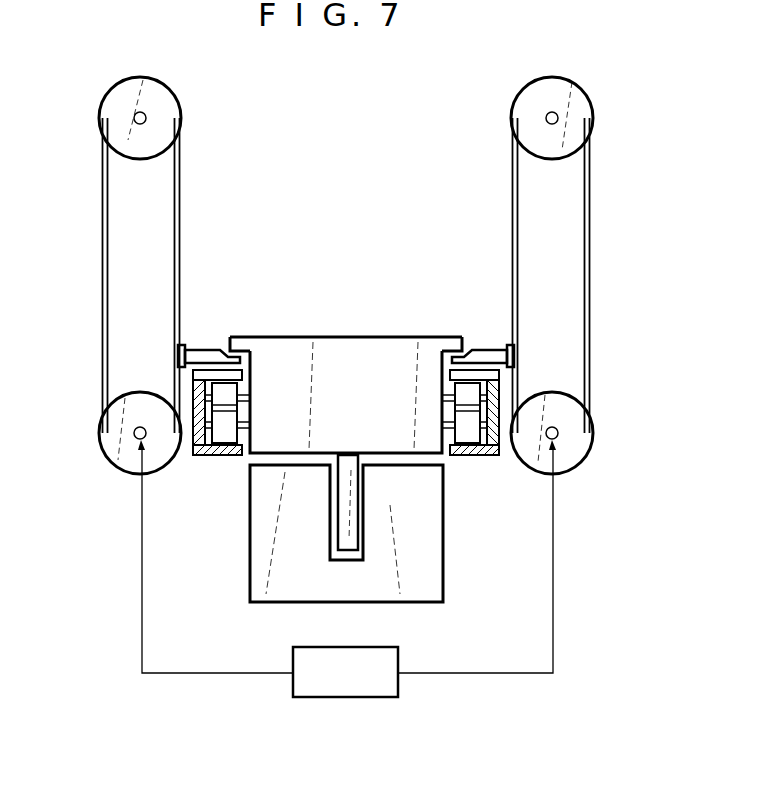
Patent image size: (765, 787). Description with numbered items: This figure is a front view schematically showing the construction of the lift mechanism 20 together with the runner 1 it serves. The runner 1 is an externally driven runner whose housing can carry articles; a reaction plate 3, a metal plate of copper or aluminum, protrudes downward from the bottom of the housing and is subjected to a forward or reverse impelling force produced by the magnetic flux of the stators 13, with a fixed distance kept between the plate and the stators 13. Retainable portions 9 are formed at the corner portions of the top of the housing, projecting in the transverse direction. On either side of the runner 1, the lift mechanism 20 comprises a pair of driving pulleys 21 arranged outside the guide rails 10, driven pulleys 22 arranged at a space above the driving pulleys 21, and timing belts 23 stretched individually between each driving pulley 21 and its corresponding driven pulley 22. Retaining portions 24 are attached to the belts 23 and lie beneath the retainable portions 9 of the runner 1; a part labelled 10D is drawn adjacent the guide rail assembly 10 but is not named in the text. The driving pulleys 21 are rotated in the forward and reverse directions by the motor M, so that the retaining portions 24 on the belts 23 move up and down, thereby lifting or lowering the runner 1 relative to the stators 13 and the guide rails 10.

The runner 1 is at (344, 348).
The reaction plate 3 is at (344, 550).
The retainable portions 9 is at (246, 337).
The guide rails 10 is at (346, 422).
The drive housing 10D is at (198, 379).
The stators 13 is at (434, 583).
The lift mechanism 20 is at (357, 275).
The driving pulleys 21 is at (100, 433).
The driven pulleys 22 is at (170, 104).
The timing belts 23 is at (181, 220).
The retaining portions 24 is at (204, 346).
The motor M is at (340, 698).